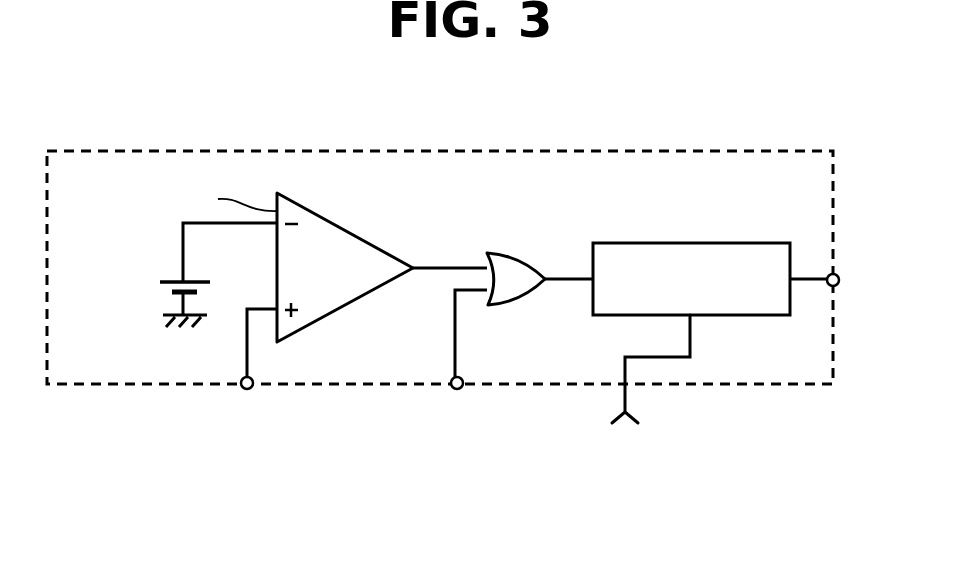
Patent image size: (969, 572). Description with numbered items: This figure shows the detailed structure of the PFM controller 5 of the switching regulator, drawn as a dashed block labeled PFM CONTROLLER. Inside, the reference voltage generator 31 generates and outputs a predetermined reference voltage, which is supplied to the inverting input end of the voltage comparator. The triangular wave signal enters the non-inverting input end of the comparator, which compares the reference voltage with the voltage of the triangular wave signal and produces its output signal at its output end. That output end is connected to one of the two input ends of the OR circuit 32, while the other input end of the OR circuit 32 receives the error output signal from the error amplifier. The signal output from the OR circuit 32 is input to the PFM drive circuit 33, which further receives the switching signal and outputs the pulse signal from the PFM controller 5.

The PFM controller 5 is at (796, 151).
The reference voltage generator 31 is at (160, 288).
The OR circuit 32 is at (530, 257).
The PFM drive circuit 33 is at (718, 243).